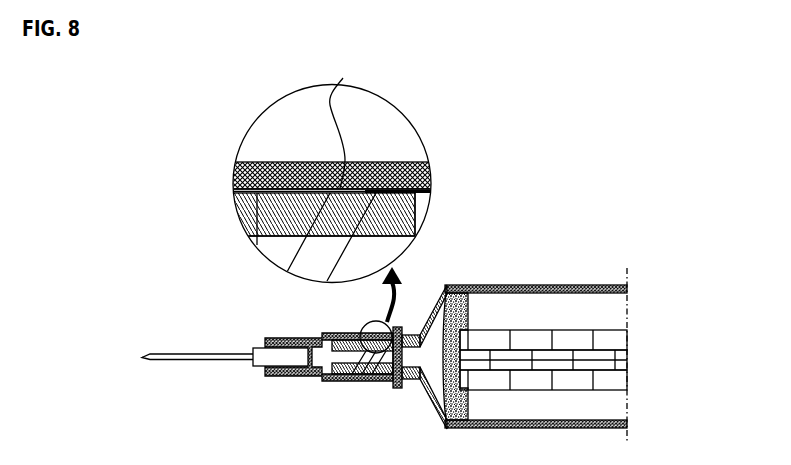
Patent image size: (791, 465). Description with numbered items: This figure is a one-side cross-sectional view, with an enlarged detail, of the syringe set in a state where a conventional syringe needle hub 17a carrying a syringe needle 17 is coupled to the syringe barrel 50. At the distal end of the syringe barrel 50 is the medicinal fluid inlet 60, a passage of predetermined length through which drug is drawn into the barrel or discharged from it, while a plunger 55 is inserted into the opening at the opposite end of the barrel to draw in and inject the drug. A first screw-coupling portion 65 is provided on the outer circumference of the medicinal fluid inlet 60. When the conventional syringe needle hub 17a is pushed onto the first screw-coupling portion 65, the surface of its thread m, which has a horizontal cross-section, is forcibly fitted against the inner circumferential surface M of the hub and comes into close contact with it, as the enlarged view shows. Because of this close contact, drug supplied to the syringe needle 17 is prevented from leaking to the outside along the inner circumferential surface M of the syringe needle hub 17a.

The syringe needle 17 is at (203, 354).
The conventional syringe needle hub 17a is at (287, 338).
The inner circumferential surface M is at (343, 121).
The thread m is at (366, 193).
The medicinal fluid inlet 60 is at (370, 311).
The first screw-coupling portion 65 is at (389, 357).
The syringe barrel 50 is at (545, 287).
The plunger 55 is at (603, 342).